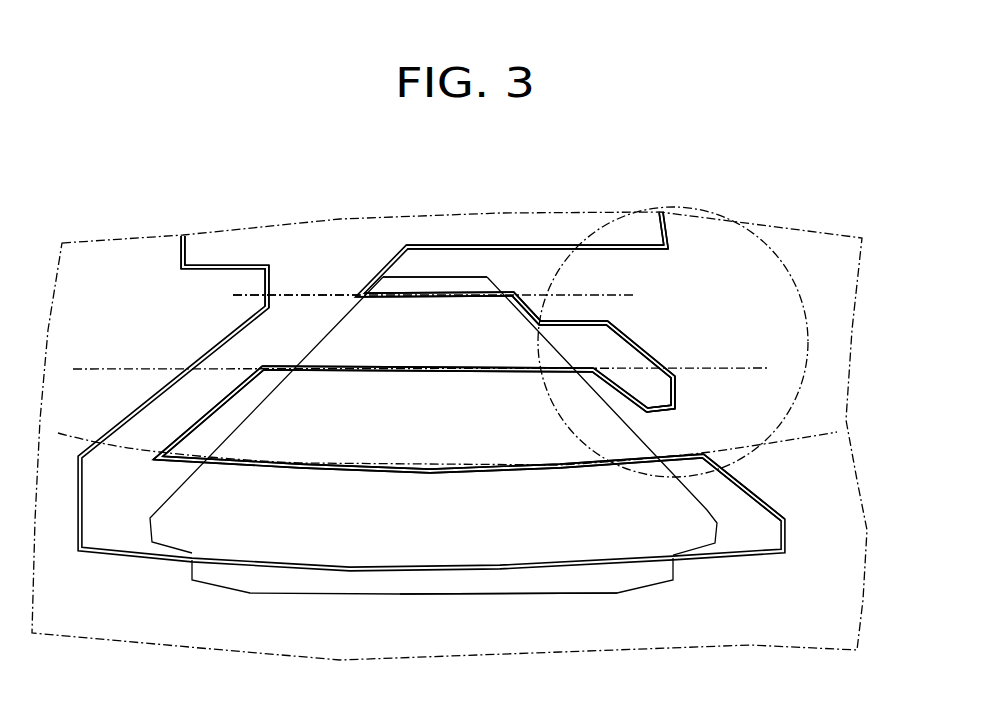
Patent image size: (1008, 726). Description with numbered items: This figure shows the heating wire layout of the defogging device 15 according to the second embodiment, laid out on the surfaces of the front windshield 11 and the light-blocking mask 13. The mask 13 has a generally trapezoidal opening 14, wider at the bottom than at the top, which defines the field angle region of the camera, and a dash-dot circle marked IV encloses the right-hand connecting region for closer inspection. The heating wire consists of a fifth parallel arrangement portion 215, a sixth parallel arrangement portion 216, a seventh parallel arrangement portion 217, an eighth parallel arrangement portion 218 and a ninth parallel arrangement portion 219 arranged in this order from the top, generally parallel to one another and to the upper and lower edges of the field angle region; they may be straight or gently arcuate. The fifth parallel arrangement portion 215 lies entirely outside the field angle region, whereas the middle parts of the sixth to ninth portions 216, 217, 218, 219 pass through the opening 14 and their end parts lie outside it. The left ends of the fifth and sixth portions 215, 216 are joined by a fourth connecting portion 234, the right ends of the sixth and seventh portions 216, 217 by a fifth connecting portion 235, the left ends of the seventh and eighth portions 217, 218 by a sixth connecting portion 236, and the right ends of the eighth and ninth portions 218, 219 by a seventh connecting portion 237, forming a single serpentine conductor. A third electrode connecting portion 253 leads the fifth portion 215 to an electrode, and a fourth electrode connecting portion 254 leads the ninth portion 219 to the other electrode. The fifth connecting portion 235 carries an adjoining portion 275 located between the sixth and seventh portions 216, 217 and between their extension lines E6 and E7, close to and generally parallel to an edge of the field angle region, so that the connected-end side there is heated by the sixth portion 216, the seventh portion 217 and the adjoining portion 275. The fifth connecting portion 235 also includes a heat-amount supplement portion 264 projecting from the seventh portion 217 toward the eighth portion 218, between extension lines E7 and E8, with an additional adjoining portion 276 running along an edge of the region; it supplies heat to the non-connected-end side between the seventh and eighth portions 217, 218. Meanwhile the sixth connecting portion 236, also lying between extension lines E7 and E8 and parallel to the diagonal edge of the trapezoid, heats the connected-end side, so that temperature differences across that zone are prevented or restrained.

The front windshield 11 is at (256, 244).
The mask 13 is at (140, 257).
The opening 14 is at (375, 522).
The defogging device 15 is at (815, 206).
The fifth parallel arrangement portion 215 is at (471, 246).
The sixth parallel arrangement portion 216 is at (450, 277).
The seventh parallel arrangement portion 217 is at (292, 293).
The eighth parallel arrangement portion 218 is at (447, 478).
The ninth parallel arrangement portion 219 is at (553, 573).
The fourth connecting portion 234 is at (358, 366).
The fifth connecting portion 235 is at (625, 333).
The sixth connecting portion 236 is at (200, 423).
The seventh connecting portion 237 is at (757, 497).
The third electrode connecting portion 253 is at (675, 213).
The fourth electrode connecting portion 254 is at (182, 236).
The heat-amount supplement portion 264 is at (675, 393).
The adjoining portion 275 is at (540, 323).
The additional adjoining portion 276 is at (665, 411).
The section IV circle IV is at (612, 218).
The extension line of the sixth parallel arrangement portion E6 is at (622, 292).
The extension line of the seventh parallel arrangement portion E7 is at (873, 280).
The extension line of the eighth parallel arrangement portion E8 is at (890, 433).